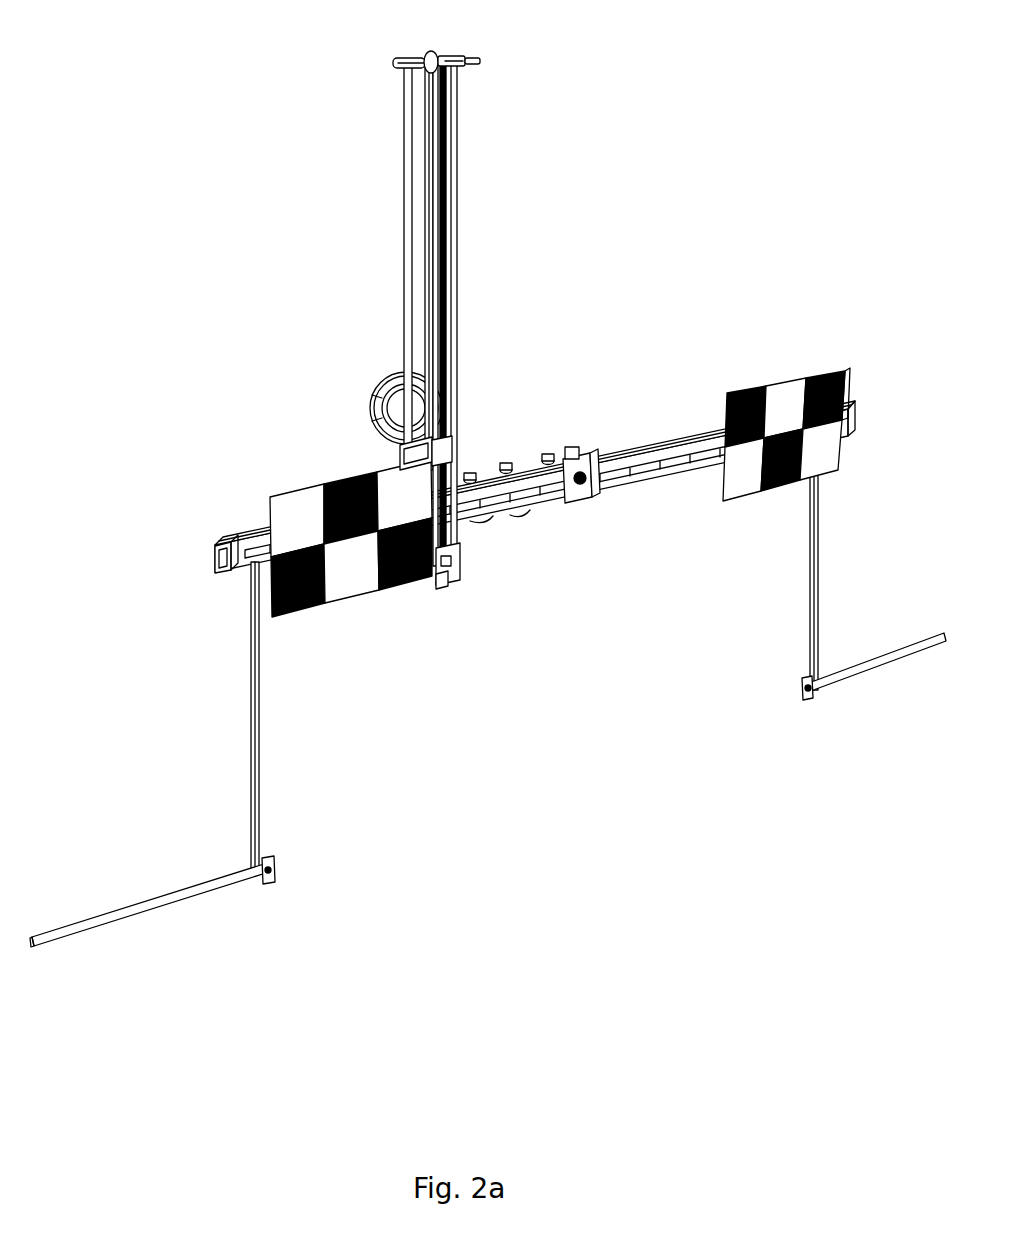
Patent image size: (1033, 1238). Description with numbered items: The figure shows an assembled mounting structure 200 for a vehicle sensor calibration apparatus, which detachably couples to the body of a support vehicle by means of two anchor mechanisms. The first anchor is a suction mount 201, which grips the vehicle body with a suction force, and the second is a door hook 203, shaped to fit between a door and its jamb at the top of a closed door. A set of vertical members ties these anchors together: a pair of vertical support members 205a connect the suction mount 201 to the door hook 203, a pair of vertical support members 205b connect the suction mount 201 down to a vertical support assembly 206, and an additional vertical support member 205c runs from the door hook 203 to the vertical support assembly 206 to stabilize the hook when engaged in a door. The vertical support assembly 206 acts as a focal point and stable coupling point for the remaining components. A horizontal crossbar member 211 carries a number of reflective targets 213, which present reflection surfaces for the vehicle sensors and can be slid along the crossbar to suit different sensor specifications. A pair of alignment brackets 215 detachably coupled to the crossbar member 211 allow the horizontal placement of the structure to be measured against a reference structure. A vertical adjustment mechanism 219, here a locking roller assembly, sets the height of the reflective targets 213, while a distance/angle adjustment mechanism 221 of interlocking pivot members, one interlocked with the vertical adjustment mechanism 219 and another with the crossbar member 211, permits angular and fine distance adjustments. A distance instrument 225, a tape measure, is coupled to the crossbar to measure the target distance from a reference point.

The mounting structure 200 is at (204, 118).
The suction mount 201 is at (388, 380).
The door hook 203 is at (402, 60).
The vertical support members 205a is at (428, 160).
The vertical support members 205b is at (440, 462).
The vertical support member 205c is at (453, 104).
The vertical support assembly 206 is at (444, 584).
The crossbar member 211 is at (668, 452).
The reflective targets 213 is at (284, 492).
The alignment brackets 215 is at (186, 892).
The vertical adjustment mechanism 219 is at (474, 544).
The distance/angle adjustment mechanism 221 is at (517, 512).
The distance instrument 225 is at (590, 490).